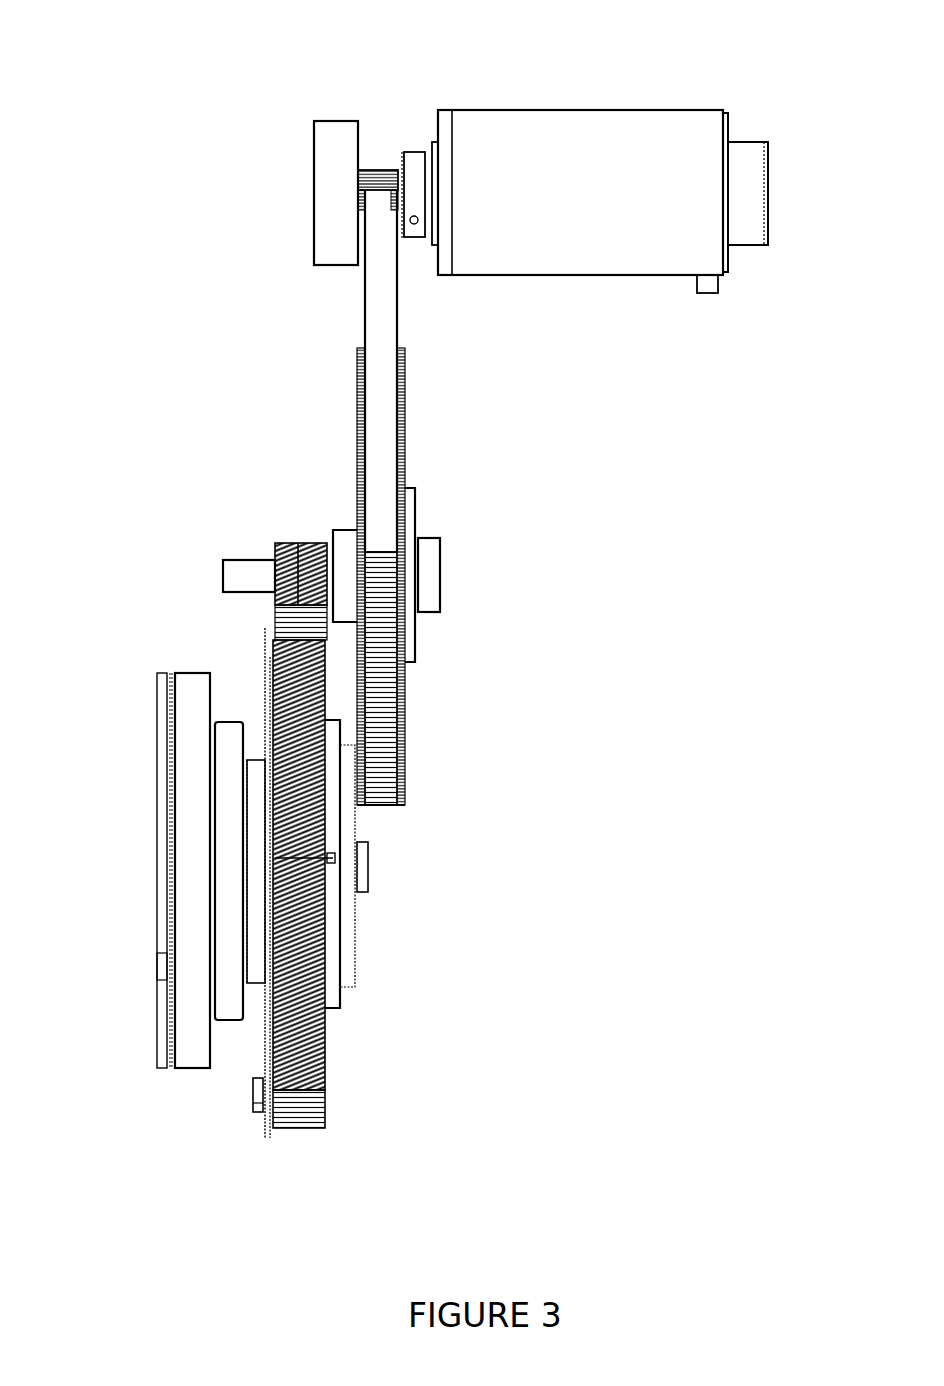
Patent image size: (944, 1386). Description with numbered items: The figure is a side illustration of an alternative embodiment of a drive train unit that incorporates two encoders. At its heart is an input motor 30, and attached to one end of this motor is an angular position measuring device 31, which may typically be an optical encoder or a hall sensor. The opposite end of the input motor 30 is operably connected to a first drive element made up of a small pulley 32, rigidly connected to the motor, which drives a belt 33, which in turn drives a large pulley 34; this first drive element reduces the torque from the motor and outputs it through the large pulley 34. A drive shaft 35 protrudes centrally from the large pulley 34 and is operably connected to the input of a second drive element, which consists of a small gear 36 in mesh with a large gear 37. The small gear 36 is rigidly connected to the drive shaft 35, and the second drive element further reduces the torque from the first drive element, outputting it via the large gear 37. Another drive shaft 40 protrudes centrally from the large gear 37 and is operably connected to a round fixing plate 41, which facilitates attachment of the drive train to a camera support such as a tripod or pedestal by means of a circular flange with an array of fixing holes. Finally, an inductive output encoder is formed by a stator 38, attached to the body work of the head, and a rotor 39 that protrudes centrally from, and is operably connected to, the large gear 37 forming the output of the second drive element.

The input motor 30 is at (527, 110).
The angular position measuring device 31 is at (757, 140).
The small pulley 32 is at (363, 170).
The belt 33 is at (365, 325).
The large pulley 34 is at (355, 422).
The drive shaft 35 is at (323, 547).
The small gear 36 is at (272, 555).
The large gear 37 is at (300, 1133).
The stator 38 is at (257, 1115).
The rotor 39 is at (265, 1138).
The drive shaft 40 is at (250, 985).
The round fixing plate 41 is at (150, 1032).